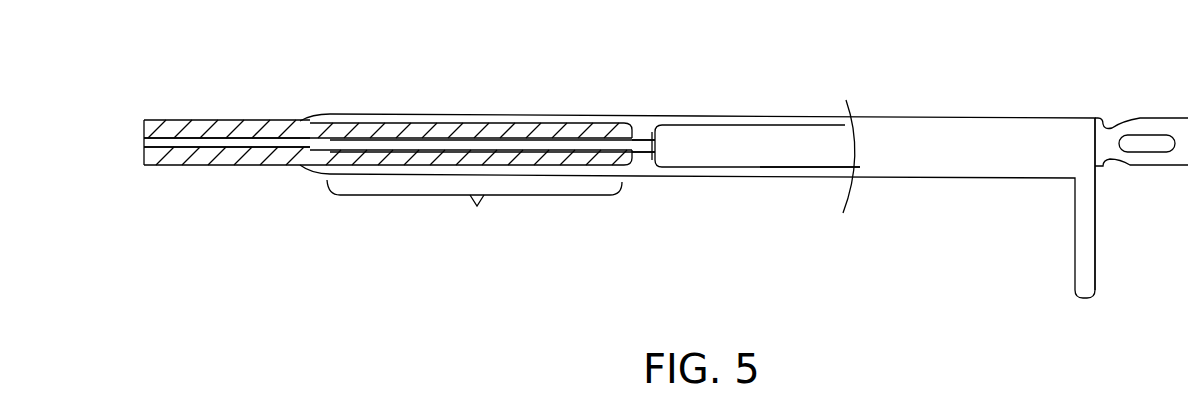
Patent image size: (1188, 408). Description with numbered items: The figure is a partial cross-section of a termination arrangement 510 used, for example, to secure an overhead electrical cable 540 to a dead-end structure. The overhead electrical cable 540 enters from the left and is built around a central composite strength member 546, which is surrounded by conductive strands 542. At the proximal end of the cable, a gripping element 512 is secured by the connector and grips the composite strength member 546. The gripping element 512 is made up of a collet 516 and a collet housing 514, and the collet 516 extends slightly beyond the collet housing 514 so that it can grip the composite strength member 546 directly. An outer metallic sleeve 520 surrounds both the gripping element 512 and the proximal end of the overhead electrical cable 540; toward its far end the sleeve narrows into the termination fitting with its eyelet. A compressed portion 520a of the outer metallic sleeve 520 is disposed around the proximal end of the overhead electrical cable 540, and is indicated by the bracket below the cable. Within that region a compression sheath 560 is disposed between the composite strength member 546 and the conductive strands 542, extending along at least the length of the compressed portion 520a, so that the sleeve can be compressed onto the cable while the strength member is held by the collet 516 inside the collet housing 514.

The termination arrangement 510 is at (1055, 65).
The gripping element 512 is at (712, 98).
The collet housing 514 is at (805, 140).
The collet 516 is at (652, 140).
The outer metallic sleeve 520 is at (902, 117).
The compressed portion 520a is at (474, 206).
The overhead electrical cable 540 is at (214, 100).
The conductive strands 542 is at (377, 130).
The composite strength member 546 is at (268, 140).
The compression sheath 560 is at (465, 138).